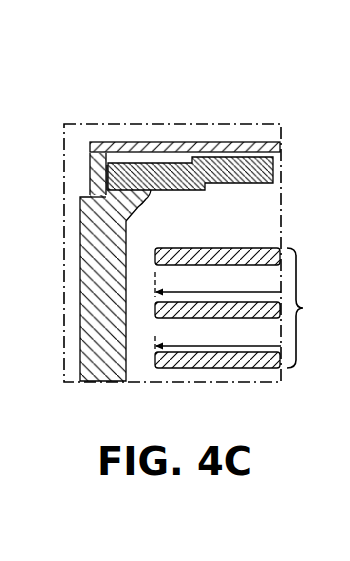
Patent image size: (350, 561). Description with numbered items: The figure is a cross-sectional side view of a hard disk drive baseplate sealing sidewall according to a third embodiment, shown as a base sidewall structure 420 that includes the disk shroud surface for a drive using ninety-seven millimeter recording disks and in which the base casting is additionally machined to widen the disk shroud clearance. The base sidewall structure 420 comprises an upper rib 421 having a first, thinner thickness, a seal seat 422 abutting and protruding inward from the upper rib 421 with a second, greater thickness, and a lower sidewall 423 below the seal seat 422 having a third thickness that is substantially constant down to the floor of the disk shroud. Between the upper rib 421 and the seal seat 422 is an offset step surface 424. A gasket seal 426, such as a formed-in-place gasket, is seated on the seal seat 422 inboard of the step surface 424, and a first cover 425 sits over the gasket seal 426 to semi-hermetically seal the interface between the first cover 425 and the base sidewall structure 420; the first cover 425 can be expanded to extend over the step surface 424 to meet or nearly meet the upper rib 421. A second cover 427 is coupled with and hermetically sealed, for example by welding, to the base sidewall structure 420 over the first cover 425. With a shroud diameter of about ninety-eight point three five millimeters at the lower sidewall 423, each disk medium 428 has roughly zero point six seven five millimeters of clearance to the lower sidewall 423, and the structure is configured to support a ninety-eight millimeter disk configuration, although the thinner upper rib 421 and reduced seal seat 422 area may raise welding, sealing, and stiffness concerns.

The base sidewall structure 420 is at (116, 95).
The upper rib 421 is at (92, 178).
The seal seat 422 is at (113, 211).
The lower sidewall 423 is at (103, 373).
The step surface 424 is at (94, 202).
The first cover 425 is at (263, 171).
The gasket seal 426 is at (140, 202).
The second cover 427 is at (237, 146).
The disk medium 428 is at (248, 308).